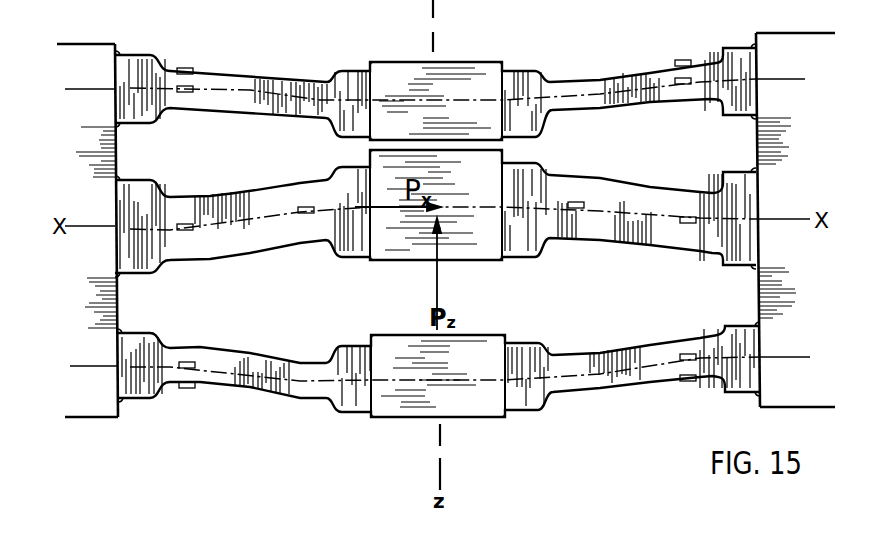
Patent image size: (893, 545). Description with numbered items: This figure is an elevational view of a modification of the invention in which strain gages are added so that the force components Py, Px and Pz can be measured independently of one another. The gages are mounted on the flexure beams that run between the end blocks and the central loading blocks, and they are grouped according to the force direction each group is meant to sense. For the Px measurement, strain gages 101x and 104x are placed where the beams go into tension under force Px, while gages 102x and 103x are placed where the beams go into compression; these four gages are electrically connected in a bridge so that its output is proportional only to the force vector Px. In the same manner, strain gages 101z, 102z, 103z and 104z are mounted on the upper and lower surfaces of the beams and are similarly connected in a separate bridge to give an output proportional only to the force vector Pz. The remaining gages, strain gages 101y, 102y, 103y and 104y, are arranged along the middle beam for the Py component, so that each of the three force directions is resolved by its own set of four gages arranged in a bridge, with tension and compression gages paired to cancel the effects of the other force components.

The strain gage 101x is at (192, 92).
The strain gage 101y is at (190, 230).
The strain gage 101z is at (218, 18).
The strain gage 102x is at (691, 84).
The strain gage 102y is at (300, 213).
The strain gage 102z is at (190, 388).
The strain gage 103x is at (713, 312).
The strain gage 103y is at (577, 209).
The strain gage 103z is at (690, 381).
The strain gage 104x is at (190, 362).
The strain gage 104y is at (688, 223).
The strain gage 104z is at (682, 60).